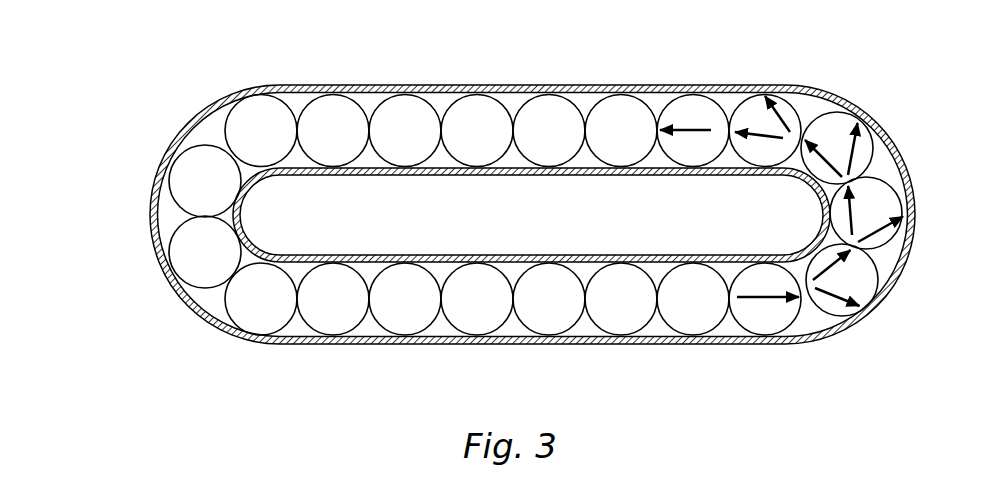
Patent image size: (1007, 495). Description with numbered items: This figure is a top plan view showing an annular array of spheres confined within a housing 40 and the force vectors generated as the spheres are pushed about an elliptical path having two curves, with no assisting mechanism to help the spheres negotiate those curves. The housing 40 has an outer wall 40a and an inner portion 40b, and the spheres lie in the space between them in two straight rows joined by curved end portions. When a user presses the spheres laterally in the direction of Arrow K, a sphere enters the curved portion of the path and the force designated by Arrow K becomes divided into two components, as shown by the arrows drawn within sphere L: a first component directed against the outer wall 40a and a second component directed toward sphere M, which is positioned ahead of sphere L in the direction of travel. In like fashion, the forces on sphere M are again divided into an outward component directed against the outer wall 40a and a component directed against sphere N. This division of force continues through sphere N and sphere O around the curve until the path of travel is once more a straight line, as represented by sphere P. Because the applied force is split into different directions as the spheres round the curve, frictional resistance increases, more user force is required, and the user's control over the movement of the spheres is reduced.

The housing 40 is at (226, 82).
The outer wall 40a is at (213, 327).
The inner tube 40b is at (233, 207).
The arrow K is at (765, 299).
The sphere L is at (842, 280).
The sphere M is at (866, 213).
The sphere N is at (837, 148).
The fiber position O is at (765, 131).
The sphere P is at (693, 131).